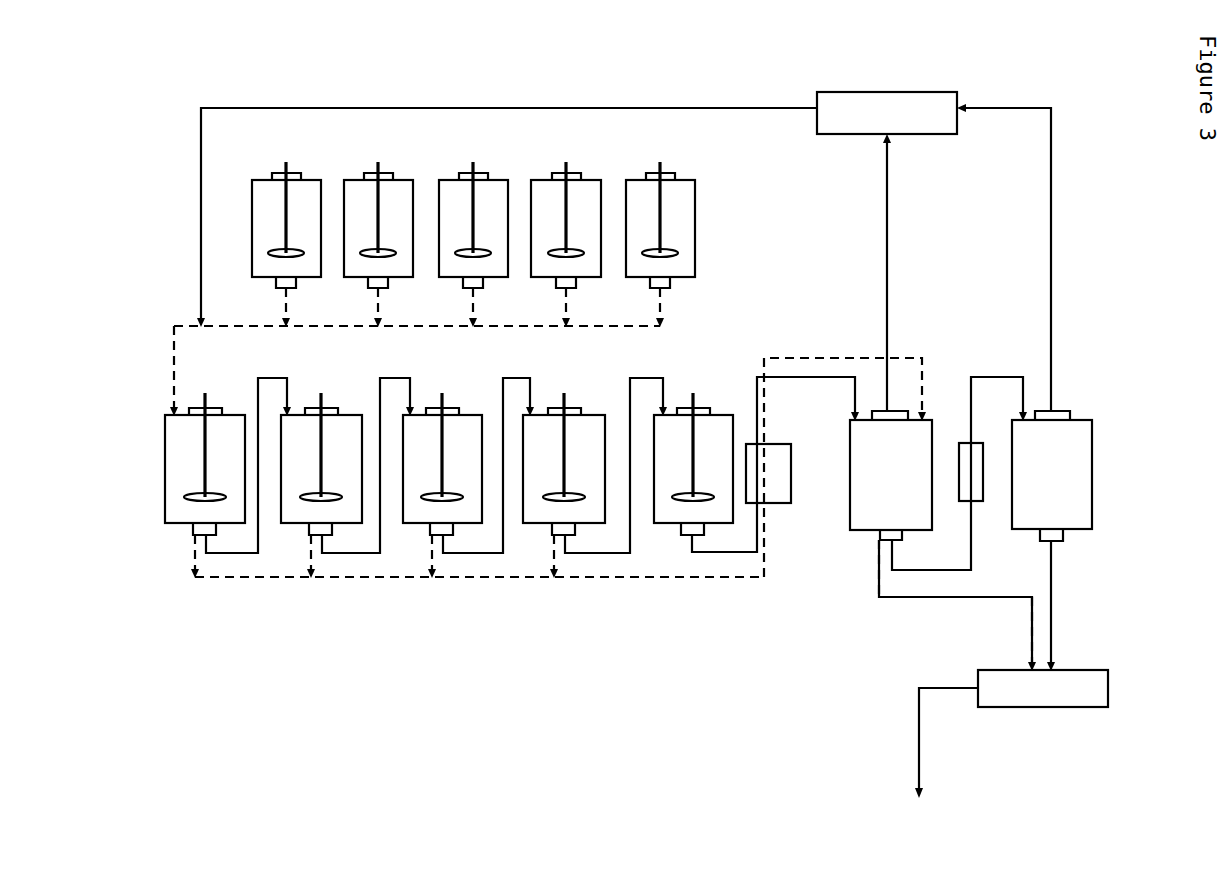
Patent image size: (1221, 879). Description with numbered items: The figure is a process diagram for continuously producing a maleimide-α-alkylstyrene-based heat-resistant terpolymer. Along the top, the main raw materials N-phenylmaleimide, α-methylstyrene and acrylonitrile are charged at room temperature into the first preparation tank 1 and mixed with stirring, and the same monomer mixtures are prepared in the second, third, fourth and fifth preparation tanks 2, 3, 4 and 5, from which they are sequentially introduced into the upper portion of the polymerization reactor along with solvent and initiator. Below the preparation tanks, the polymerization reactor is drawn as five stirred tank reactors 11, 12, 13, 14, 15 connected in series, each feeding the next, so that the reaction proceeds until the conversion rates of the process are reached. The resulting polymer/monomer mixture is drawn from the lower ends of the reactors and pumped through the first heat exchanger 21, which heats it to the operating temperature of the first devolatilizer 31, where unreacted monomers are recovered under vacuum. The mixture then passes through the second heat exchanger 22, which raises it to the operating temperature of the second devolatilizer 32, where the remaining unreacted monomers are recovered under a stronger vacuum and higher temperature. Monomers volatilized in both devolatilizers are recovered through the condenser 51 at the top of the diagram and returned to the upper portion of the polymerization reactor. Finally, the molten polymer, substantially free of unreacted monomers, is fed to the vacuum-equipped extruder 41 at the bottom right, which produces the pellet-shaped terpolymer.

The first preparation tank 1 is at (320, 180).
The second preparation tank 2 is at (413, 180).
The third preparation tank 3 is at (507, 180).
The fourth preparation tank 4 is at (600, 180).
The fifth preparation tank 5 is at (694, 180).
The stirred tank reactor 11 is at (199, 406).
The stirred tank reactor 12 is at (333, 406).
The stirred tank reactor 13 is at (455, 406).
The stirred tank reactor 14 is at (578, 406).
The stirred tank reactor 15 is at (706, 404).
The first heat exchanger 21 is at (768, 444).
The second heat exchanger 22 is at (974, 441).
The first devolatilizer 31 is at (933, 402).
The second devolatilizer 32 is at (1092, 418).
The extruder 41 is at (1108, 670).
The condenser 51 is at (893, 112).